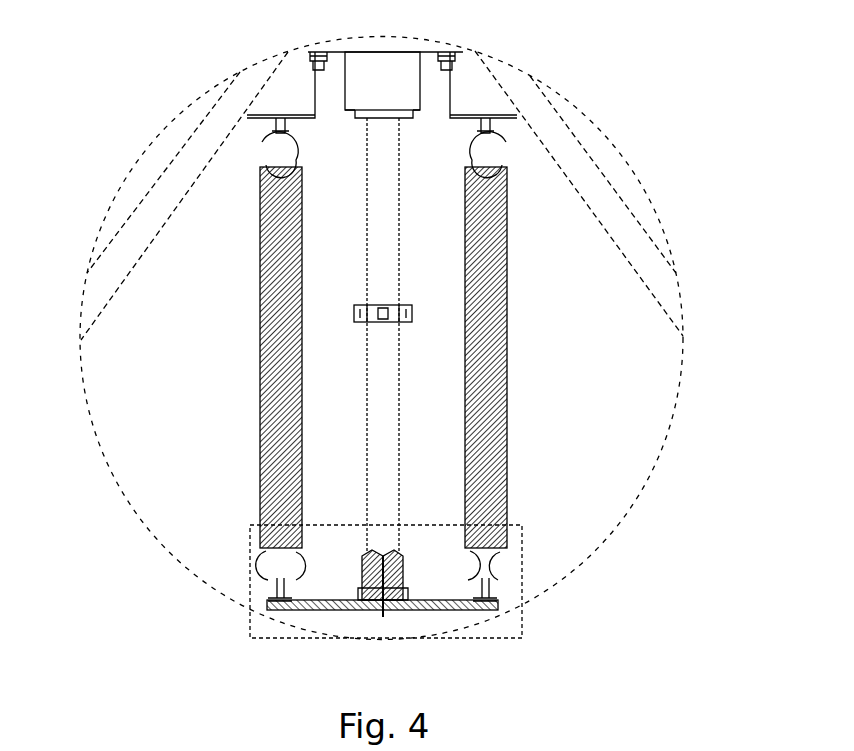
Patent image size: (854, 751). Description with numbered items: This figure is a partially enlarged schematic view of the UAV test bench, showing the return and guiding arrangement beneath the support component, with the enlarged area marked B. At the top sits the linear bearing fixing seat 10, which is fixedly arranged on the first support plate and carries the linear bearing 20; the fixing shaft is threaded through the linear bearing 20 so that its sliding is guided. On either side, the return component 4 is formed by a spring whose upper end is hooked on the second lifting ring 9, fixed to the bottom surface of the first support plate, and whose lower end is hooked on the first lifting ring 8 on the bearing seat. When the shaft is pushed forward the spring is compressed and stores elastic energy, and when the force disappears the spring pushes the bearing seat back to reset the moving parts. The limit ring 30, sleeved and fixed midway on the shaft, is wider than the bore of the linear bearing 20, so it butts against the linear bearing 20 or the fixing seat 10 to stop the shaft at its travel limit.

The return component 4 is at (262, 408).
The first lifting ring 8 is at (280, 590).
The second lifting ring 9 is at (280, 122).
The linear bearing fixing seat 10 is at (410, 93).
The linear bearing 20 is at (450, 110).
The limit ring 30 is at (403, 306).
The region B is at (513, 640).